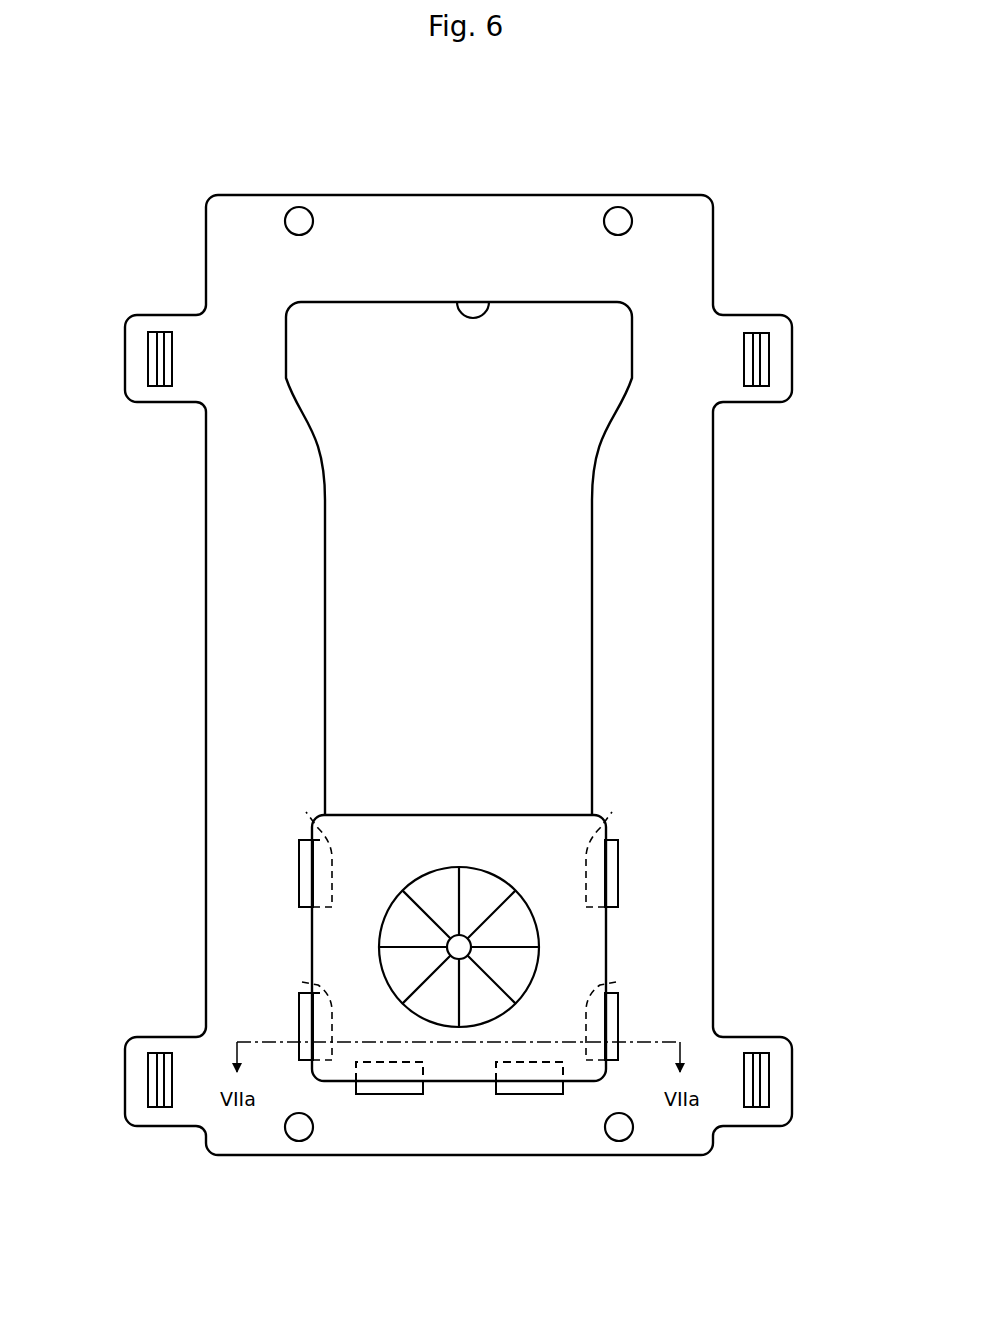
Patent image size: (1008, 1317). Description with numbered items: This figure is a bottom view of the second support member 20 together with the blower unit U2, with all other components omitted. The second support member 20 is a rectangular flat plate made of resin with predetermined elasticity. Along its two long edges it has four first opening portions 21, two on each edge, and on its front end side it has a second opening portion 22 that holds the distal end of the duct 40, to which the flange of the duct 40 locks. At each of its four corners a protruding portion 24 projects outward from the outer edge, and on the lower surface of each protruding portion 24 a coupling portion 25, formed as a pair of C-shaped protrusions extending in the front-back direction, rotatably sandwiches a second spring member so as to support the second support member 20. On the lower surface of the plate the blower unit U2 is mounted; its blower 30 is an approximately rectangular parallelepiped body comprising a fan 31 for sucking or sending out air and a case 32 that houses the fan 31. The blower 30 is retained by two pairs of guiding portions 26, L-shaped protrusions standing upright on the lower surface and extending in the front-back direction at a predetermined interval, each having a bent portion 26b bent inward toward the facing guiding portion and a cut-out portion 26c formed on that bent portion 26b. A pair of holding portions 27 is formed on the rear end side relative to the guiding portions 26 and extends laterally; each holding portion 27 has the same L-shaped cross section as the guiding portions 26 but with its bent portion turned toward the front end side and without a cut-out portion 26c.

The second support member 20 is at (800, 138).
The first opening portions 21 is at (304, 224).
The second opening portion 22 is at (490, 302).
The protruding portions 24 is at (162, 323).
The coupling portion 25 is at (152, 358).
The guiding portions 26 is at (466, 891).
The bent portion 26b is at (299, 843).
The cut-out portion 26c is at (315, 812).
The holding portion 27 is at (510, 1094).
The blower 30 is at (463, 873).
The fan 31 is at (476, 888).
The case 32 is at (522, 830).
The duct 40 is at (557, 508).
The blower unit U2 is at (681, 545).